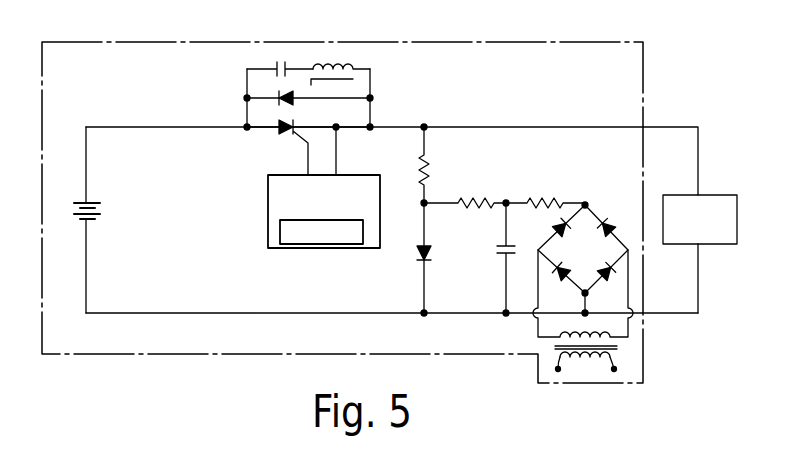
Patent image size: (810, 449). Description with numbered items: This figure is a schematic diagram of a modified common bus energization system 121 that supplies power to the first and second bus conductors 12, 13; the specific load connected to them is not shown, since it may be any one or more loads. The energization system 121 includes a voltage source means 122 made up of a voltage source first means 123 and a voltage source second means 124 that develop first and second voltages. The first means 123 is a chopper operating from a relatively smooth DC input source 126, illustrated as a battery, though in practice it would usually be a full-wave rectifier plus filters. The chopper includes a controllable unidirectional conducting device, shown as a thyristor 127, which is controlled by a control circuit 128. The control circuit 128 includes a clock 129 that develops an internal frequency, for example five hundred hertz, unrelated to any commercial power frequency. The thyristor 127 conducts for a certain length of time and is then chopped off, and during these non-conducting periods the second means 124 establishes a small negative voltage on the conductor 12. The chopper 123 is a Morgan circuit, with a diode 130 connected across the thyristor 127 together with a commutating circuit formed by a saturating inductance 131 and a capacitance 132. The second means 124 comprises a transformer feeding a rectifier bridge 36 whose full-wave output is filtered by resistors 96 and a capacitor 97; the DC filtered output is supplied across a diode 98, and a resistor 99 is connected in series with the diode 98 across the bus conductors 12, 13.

The first bus conductor 12 is at (650, 127).
The second bus conductor 13 is at (657, 318).
The rectifier bridge 36 is at (597, 261).
The resistors 96 is at (550, 196).
The capacitor 97 is at (504, 258).
The diode 98 is at (432, 252).
The resistor 99 is at (432, 172).
The common bus energization system 121 is at (656, 75).
The voltage source means 122 is at (440, 41).
The voltage source first means 123 is at (252, 173).
The voltage source second means 124 is at (600, 188).
The DC input source 126 is at (97, 203).
The thyristor 127 is at (283, 133).
The control circuit 128 is at (358, 250).
The clock 129 is at (280, 232).
The diode 130 is at (295, 100).
The saturating inductance 131 is at (352, 86).
The capacitance 132 is at (276, 64).